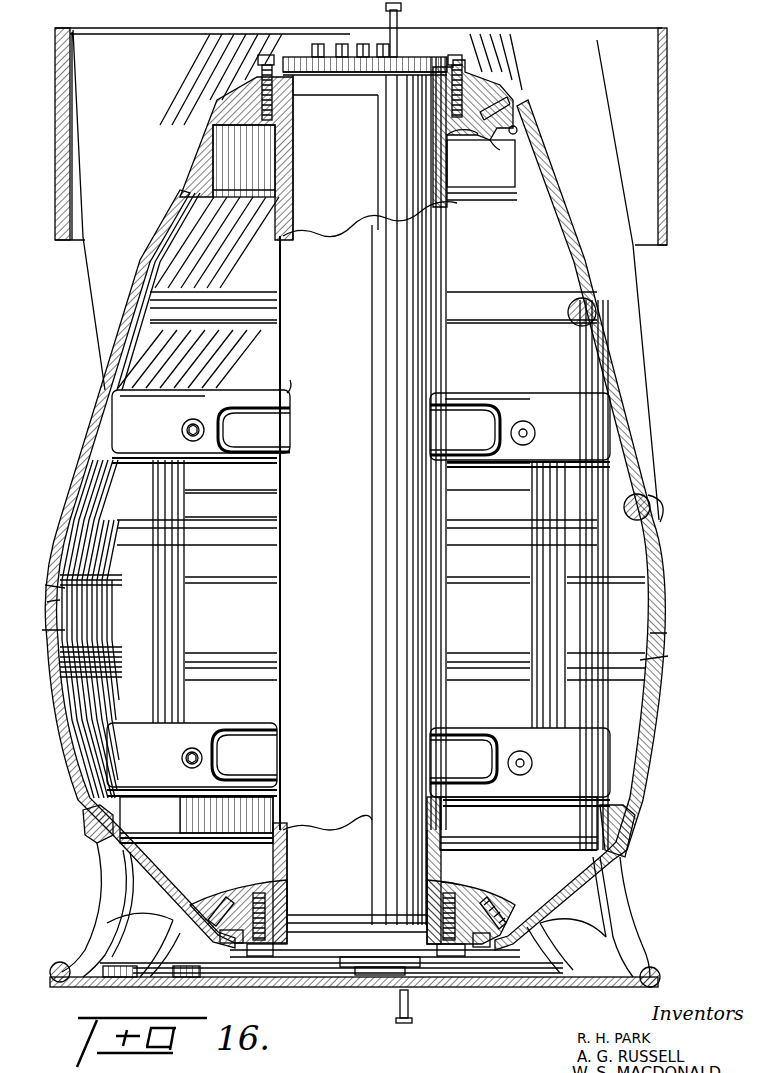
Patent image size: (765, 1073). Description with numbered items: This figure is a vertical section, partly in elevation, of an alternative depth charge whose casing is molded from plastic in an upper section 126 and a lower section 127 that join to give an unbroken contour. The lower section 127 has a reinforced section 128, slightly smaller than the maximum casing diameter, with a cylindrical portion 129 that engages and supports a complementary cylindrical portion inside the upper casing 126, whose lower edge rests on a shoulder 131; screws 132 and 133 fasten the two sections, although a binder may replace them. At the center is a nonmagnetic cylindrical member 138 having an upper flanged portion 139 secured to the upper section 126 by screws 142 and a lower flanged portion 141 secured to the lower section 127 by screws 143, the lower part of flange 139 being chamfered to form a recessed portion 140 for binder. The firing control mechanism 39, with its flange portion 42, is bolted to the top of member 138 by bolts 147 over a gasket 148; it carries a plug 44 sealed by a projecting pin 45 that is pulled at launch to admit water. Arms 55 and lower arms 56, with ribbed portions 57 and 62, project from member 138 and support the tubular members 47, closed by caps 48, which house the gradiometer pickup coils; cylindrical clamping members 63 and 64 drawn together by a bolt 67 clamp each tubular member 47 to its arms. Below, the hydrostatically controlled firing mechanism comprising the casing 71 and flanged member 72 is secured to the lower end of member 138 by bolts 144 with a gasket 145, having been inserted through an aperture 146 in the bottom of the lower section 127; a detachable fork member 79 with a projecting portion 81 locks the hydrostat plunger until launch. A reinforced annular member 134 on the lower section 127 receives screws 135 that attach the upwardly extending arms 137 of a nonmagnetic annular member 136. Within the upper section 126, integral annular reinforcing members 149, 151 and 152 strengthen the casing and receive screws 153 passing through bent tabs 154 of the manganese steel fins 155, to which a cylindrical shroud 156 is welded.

The firing control mechanism 39 is at (370, 157).
The flange portion 42 is at (450, 58).
The plug 44 is at (388, 28).
The projecting pin 45 is at (400, 16).
The tubular member 47 is at (180, 622).
The cap 48 is at (190, 387).
The arm 55 is at (334, 407).
The lower arm 56 is at (217, 737).
The ribbed portion 57 is at (248, 417).
The ribbed portion 62 is at (248, 750).
The clamping member 63 is at (533, 437).
The clamping member 64 is at (203, 424).
The bolt 67 is at (182, 431).
The casing 71 is at (357, 870).
The flanged member 72 is at (333, 938).
The fork member 79 is at (380, 993).
The projecting portion 81 is at (410, 1001).
The upper section 126 is at (90, 445).
The lower section 127 is at (77, 781).
The reinforced section 128 is at (352, 571).
The cylindrical portion 129 is at (50, 603).
The shoulder 131 is at (667, 654).
The screw 132 is at (52, 590).
The screw 133 is at (48, 631).
The reinforced annular member 134 is at (358, 823).
The screw 135 is at (83, 833).
The nonmagnetic annular member 136 is at (477, 991).
The arm 137 is at (113, 904).
The cylindrical member 138 is at (363, 491).
The flanged portion 139 is at (494, 132).
The recessed portion 140 is at (518, 131).
The flanged portion 141 is at (457, 887).
The screw 142 is at (213, 105).
The screw 143 is at (207, 936).
The bolt 144 is at (283, 921).
The gasket 145 is at (489, 893).
The aperture 146 is at (208, 956).
The bolt 147 is at (268, 55).
The gasket 148 is at (490, 78).
The annular reinforcing member 149 is at (517, 177).
The annular reinforcing member 151 is at (373, 307).
The annular reinforcing member 152 is at (357, 522).
The screw 153 is at (665, 509).
The tab 154 is at (594, 323).
The fin 155 is at (649, 337).
The shroud 156 is at (670, 212).